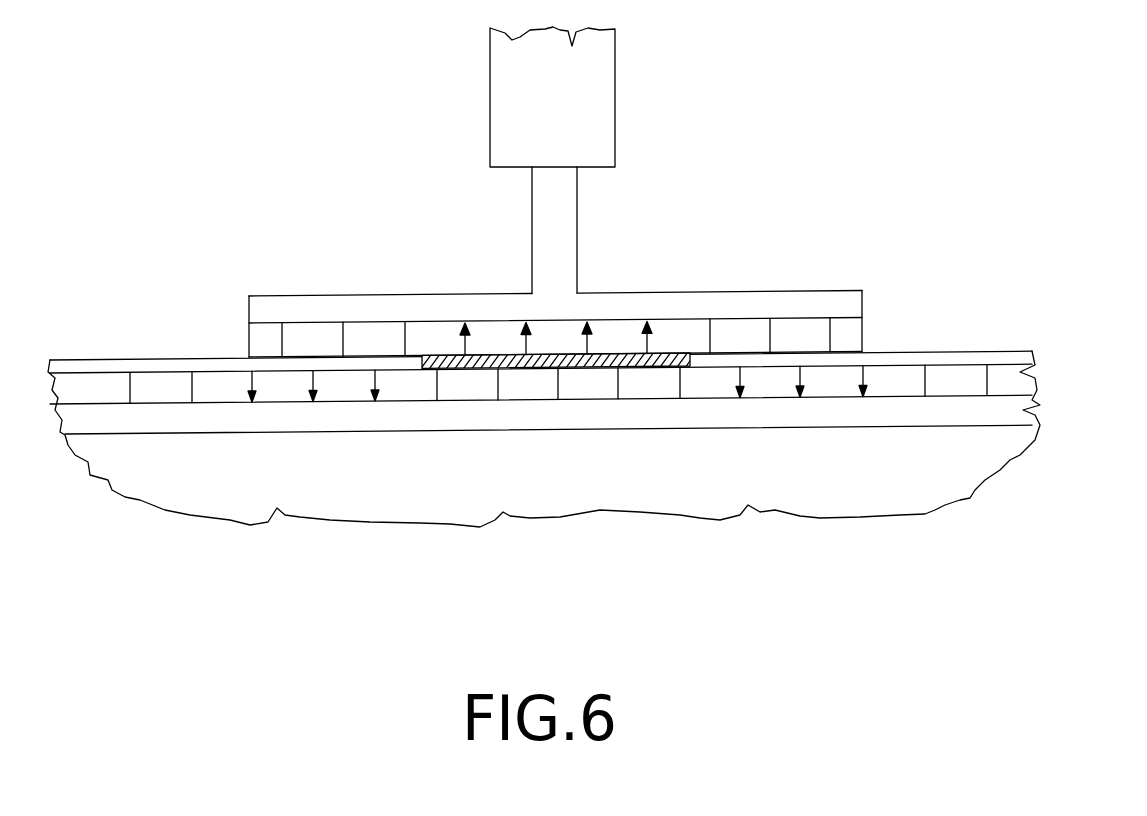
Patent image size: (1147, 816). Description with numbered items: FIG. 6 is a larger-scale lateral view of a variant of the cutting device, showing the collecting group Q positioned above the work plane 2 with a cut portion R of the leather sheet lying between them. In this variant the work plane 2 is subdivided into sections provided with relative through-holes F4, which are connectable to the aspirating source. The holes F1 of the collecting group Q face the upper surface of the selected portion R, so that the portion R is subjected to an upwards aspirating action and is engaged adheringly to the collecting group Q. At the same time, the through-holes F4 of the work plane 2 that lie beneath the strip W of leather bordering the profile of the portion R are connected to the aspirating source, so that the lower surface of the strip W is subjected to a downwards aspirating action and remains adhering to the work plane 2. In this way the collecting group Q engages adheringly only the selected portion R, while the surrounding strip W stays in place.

The pressing tool assembly Q is at (677, 203).
The upward pressing force F1 is at (467, 342).
The through-holes F4 is at (308, 383).
The strip W is at (343, 365).
The portion R is at (620, 368).
The work plane 2 is at (1020, 372).